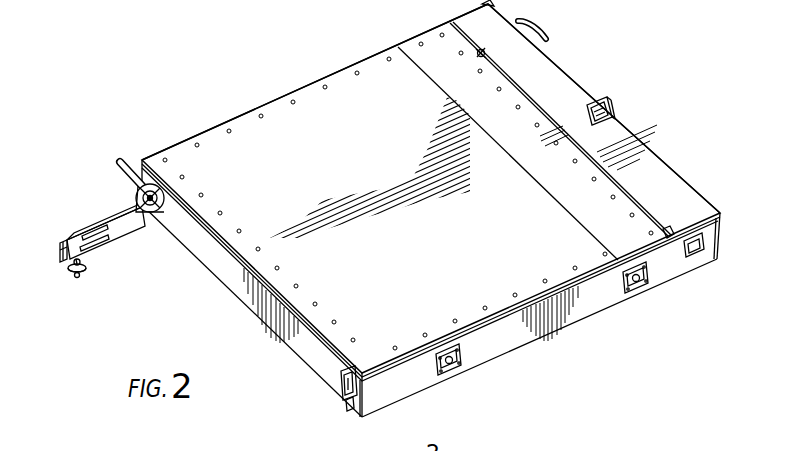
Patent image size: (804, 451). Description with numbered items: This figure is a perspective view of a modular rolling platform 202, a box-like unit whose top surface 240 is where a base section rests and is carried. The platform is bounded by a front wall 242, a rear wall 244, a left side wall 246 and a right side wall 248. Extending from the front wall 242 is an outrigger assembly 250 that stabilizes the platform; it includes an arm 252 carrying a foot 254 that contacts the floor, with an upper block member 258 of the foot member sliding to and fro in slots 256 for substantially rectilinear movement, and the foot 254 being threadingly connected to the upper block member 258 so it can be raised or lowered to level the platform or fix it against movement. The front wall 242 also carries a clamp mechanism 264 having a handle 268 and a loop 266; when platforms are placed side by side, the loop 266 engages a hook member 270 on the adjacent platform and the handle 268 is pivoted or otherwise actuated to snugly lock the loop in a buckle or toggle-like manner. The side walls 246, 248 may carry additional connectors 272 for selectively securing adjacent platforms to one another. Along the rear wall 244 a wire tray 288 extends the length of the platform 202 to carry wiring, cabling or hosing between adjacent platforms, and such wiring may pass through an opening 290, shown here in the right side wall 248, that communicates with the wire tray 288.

The modular rolling platform 202 is at (228, 74).
The top surface 240 is at (342, 156).
The front wall 242 is at (310, 361).
The rear wall 244 is at (630, 137).
The left side wall 246 is at (200, 133).
The right side wall 248 is at (567, 320).
The outrigger assembly 250 is at (94, 204).
The arm 252 is at (101, 245).
The foot 254 is at (79, 274).
The slots 256 is at (108, 243).
The upper block member 258 is at (66, 262).
The clamp mechanism 264 is at (98, 183).
The loop 266 is at (108, 158).
The handle 268 is at (162, 215).
The hook member 270 is at (345, 397).
The connectors 272 is at (652, 298).
The wire tray 288 is at (566, 86).
The opening 290 is at (695, 232).